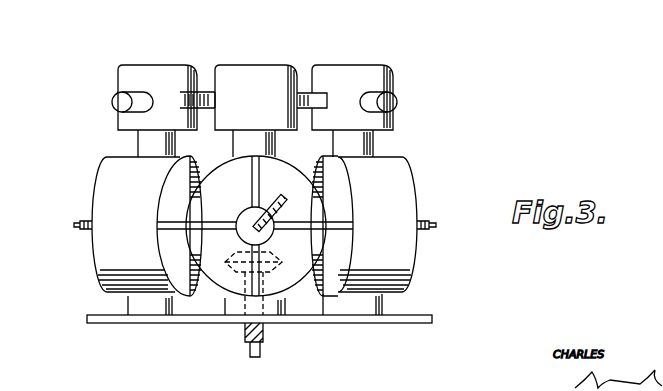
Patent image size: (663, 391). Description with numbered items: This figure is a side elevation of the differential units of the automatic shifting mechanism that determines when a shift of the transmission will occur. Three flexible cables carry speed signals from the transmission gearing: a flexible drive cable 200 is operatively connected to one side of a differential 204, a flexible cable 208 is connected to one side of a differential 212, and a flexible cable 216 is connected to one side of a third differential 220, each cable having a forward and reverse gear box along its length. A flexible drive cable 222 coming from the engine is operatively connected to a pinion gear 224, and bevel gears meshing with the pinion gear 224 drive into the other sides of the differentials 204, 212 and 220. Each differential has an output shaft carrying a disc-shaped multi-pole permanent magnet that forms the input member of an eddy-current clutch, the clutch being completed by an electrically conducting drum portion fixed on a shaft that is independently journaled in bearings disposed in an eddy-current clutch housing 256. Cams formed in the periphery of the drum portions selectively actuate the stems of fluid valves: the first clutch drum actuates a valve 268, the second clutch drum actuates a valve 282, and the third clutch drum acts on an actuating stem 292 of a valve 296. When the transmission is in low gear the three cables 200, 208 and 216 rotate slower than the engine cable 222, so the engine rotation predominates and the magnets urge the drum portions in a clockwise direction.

The flexible drive cable 200 is at (88, 221).
The differential 204 is at (102, 252).
The flexible cable 208 is at (422, 222).
The differential 212 is at (395, 180).
The flexible cable 216 is at (266, 206).
The third differential 220 is at (222, 280).
The flexible drive cable 222 is at (245, 343).
The pinion gear 224 is at (287, 262).
The eddy-current clutch housing 256 is at (156, 80).
The fluid valve 268 is at (103, 103).
The fluid valve 282 is at (405, 105).
The actuating stem 292 is at (208, 85).
The valve 296 is at (307, 87).